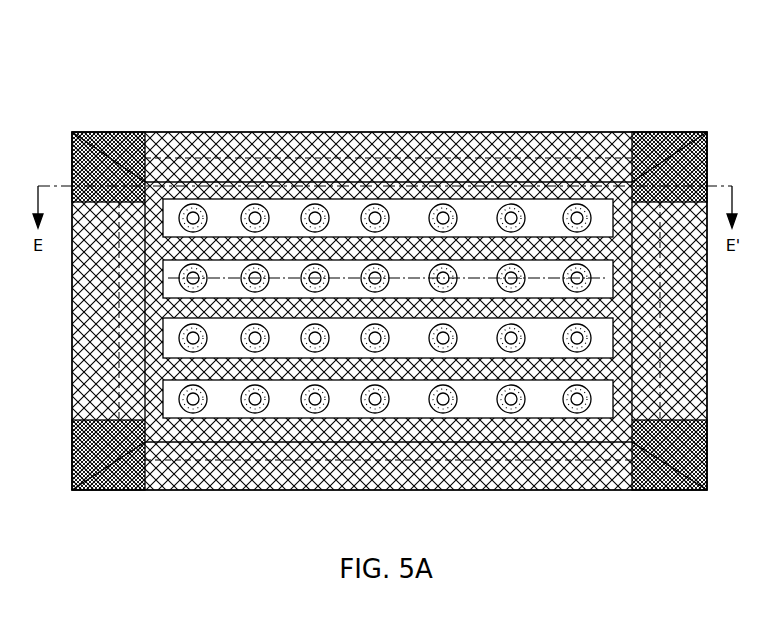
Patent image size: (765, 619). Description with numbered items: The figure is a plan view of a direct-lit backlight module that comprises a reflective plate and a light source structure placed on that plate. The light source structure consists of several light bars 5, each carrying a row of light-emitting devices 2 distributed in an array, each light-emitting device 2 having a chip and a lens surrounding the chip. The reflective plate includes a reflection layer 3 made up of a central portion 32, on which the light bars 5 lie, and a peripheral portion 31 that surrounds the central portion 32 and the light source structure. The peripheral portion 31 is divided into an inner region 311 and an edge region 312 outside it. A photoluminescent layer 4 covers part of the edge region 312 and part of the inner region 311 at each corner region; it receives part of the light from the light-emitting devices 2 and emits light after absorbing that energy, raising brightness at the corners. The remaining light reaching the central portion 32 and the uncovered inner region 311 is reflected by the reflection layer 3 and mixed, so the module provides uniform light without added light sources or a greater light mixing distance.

The light-emitting device 2 is at (251, 206).
The reflection layer 3 is at (389, 265).
The peripheral portion 31 is at (388, 125).
The inner region 311 is at (522, 167).
The edge region 312 is at (558, 152).
The central portion 32 is at (477, 190).
The photoluminescent layer 4 is at (72, 132).
The light bar 5 is at (287, 199).